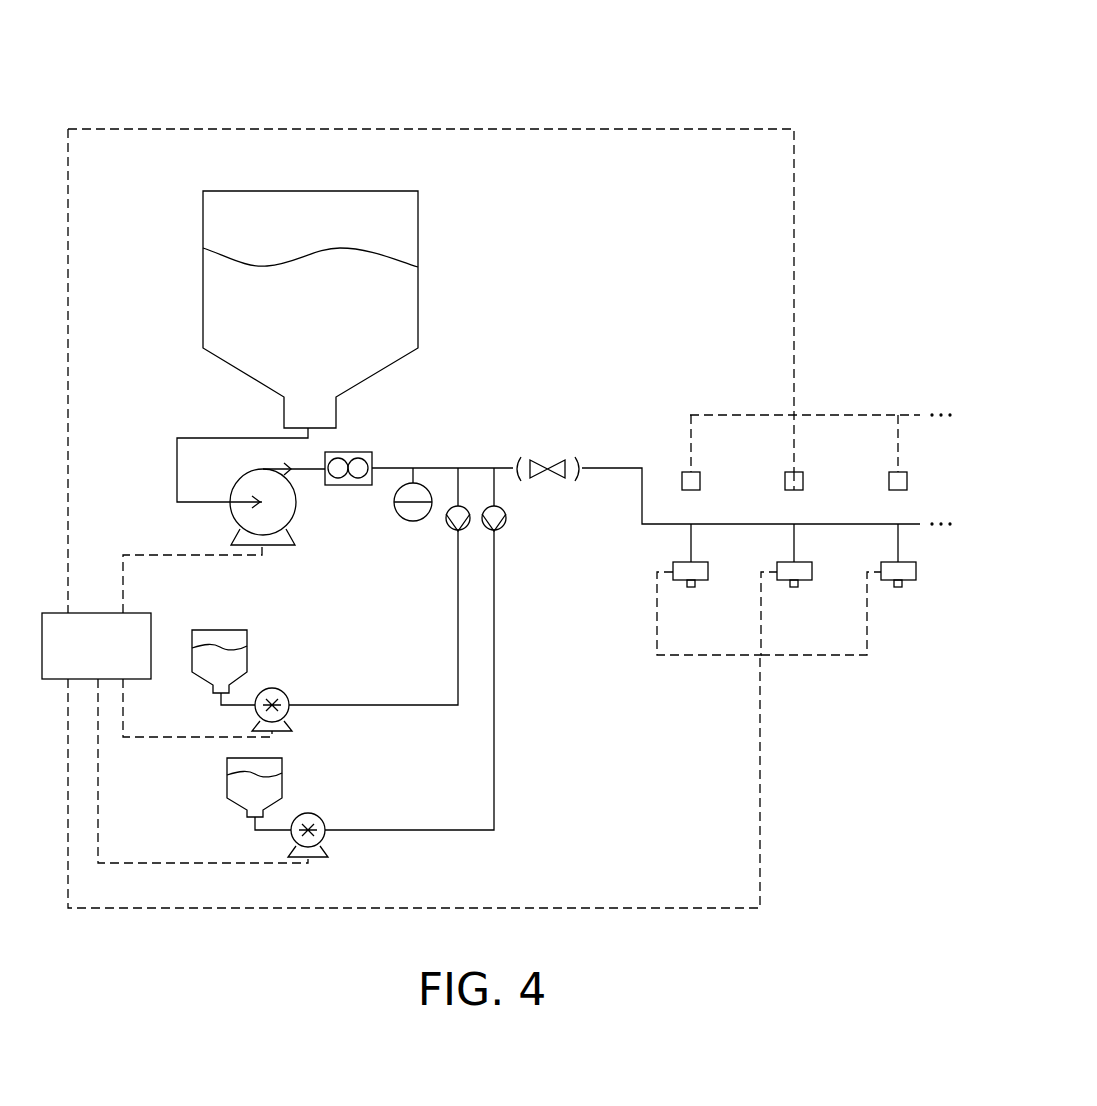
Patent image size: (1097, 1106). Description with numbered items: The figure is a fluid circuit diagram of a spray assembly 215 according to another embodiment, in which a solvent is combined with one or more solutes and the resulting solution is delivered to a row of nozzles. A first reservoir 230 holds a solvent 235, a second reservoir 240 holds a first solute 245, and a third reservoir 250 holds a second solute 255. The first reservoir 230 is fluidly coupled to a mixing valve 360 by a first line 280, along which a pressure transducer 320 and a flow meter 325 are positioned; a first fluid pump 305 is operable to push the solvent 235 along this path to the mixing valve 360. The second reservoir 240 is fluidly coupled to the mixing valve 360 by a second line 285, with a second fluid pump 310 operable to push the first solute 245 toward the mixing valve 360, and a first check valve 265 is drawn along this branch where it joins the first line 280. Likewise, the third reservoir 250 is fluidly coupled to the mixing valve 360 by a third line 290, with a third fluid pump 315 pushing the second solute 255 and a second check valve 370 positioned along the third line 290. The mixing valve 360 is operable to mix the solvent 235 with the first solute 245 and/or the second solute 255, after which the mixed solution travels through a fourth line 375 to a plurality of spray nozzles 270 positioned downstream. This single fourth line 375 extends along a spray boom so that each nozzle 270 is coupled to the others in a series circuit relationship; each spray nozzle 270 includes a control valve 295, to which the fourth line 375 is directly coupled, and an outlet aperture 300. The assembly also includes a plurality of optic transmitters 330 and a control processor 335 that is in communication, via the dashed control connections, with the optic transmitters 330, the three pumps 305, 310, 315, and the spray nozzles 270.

The spray assembly 215 is at (627, 106).
The first reservoir 230 is at (260, 191).
The solvent 235 is at (310, 295).
The first fluid pump 305 is at (294, 522).
The flow meter 325 is at (358, 452).
The first line 280 is at (475, 468).
The pressure transducer 320 is at (408, 521).
The check valve 265 is at (456, 531).
The second check valve 370 is at (498, 531).
The mixing valve 360 is at (582, 480).
The fourth line 375 is at (612, 468).
The optic transmitters 330 is at (700, 481).
The control valve 295 is at (673, 565).
The outlet aperture 300 is at (691, 588).
The spray nozzles 270 is at (912, 627).
The control processor 335 is at (108, 613).
The second reservoir 240 is at (247, 638).
The first solute 245 is at (219, 657).
The second fluid pump 310 is at (289, 693).
The second line 285 is at (430, 706).
The third reservoir 250 is at (282, 765).
The second solute 255 is at (254, 784).
The third fluid pump 315 is at (325, 820).
The third line 290 is at (495, 765).